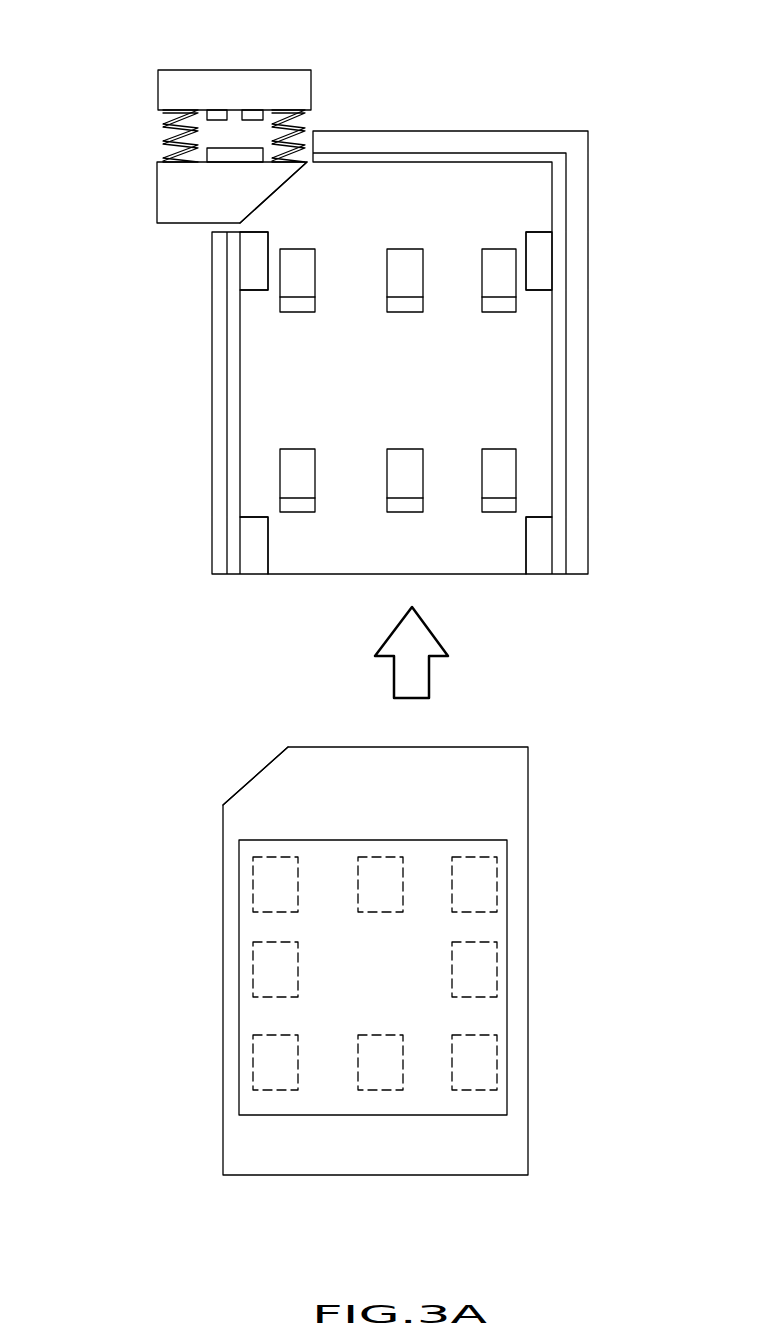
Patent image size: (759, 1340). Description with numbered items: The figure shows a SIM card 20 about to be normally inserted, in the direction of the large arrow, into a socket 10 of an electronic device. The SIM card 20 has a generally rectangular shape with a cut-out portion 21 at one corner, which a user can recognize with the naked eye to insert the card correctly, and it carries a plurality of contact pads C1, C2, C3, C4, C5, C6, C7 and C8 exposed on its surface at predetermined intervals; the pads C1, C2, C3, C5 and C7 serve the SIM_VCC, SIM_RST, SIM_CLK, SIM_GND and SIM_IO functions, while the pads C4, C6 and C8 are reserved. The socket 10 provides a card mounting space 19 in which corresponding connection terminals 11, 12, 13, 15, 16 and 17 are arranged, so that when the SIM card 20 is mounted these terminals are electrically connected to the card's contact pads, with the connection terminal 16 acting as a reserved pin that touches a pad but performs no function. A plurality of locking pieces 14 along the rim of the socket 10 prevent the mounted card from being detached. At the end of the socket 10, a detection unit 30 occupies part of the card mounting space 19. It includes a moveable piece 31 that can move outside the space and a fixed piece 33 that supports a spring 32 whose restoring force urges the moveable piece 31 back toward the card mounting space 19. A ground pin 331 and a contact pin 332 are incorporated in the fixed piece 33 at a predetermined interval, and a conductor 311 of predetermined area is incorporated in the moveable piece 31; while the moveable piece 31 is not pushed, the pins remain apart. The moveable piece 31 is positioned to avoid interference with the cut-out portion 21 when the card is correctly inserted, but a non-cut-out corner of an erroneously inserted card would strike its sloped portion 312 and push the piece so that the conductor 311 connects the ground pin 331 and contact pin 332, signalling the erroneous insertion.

The socket 10 is at (598, 267).
The connection terminal 11 is at (510, 478).
The connection terminal 12 is at (392, 486).
The connection terminal 13 is at (290, 473).
The locking piece 14 is at (253, 290).
The connection terminal 15 is at (498, 258).
The connection terminal (reserved pin) 16 is at (407, 262).
The connection terminal 17 is at (287, 292).
The card mounting space 19 is at (419, 386).
The SIM card 20 is at (645, 765).
The cut-out portion 21 is at (250, 782).
The detection unit 30 is at (98, 70).
The moveable piece 31 is at (157, 188).
The conductor 311 is at (241, 148).
The sloped portion 312 is at (272, 194).
The spring 32 is at (165, 137).
The fixed piece 33 is at (288, 70).
The ground pin 331 is at (213, 122).
The contact pin 332 is at (264, 122).
The contact pad (SIM_VCC) C1 is at (485, 1068).
The contact pad (SIM_RST) C2 is at (378, 1075).
The contact pad (SIM_CLK) C3 is at (272, 1075).
The contact pad C4 is at (485, 972).
The contact pad (SIM_GND) C5 is at (485, 887).
The contact pad C6 is at (383, 870).
The contact pad (SIM_IO) C7 is at (261, 890).
The contact pad C8 is at (263, 975).